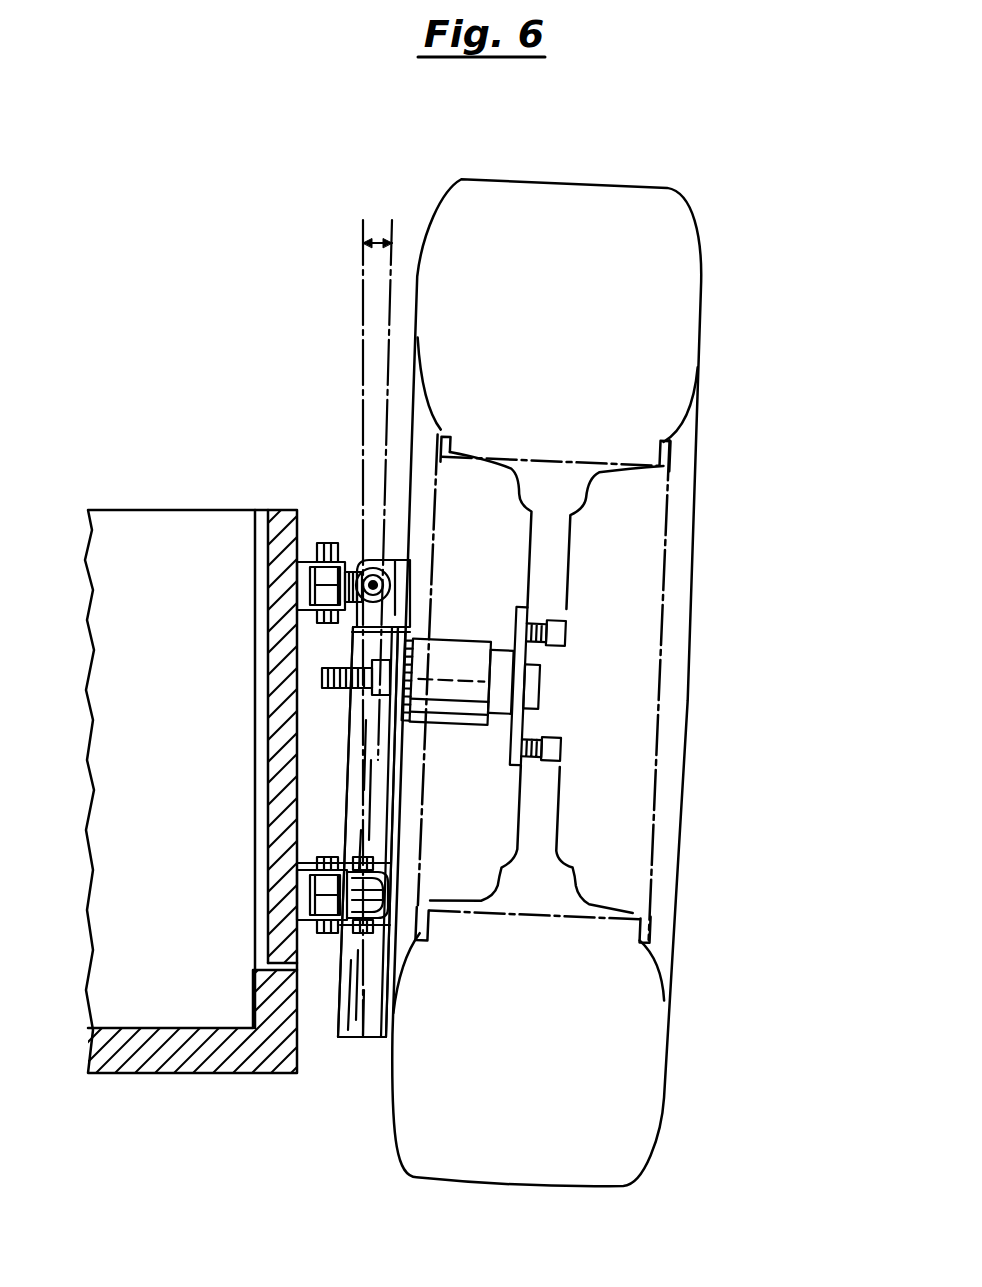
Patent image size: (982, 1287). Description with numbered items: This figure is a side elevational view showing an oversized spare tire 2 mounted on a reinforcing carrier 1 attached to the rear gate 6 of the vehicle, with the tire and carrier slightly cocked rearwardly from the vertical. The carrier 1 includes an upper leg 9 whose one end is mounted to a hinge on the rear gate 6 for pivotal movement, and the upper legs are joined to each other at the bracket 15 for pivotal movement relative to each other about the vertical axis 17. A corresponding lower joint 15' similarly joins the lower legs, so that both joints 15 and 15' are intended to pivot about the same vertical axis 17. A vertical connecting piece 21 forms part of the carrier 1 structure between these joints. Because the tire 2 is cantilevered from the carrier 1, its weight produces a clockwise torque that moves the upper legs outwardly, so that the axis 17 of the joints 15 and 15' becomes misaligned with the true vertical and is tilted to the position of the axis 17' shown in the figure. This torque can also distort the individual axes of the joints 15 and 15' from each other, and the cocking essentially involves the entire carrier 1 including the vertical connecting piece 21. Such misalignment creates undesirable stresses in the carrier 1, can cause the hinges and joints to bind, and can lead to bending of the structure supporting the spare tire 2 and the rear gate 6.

The carrier 1 is at (318, 480).
The tire 2 is at (695, 266).
The rear gate 6 is at (268, 750).
The leg 9 is at (353, 565).
The bracket 15 is at (426, 592).
The joint 15' is at (400, 870).
The vertical axis 17 is at (301, 628).
The tilted axis 17' is at (317, 490).
The vertical connecting piece 21 is at (349, 1037).